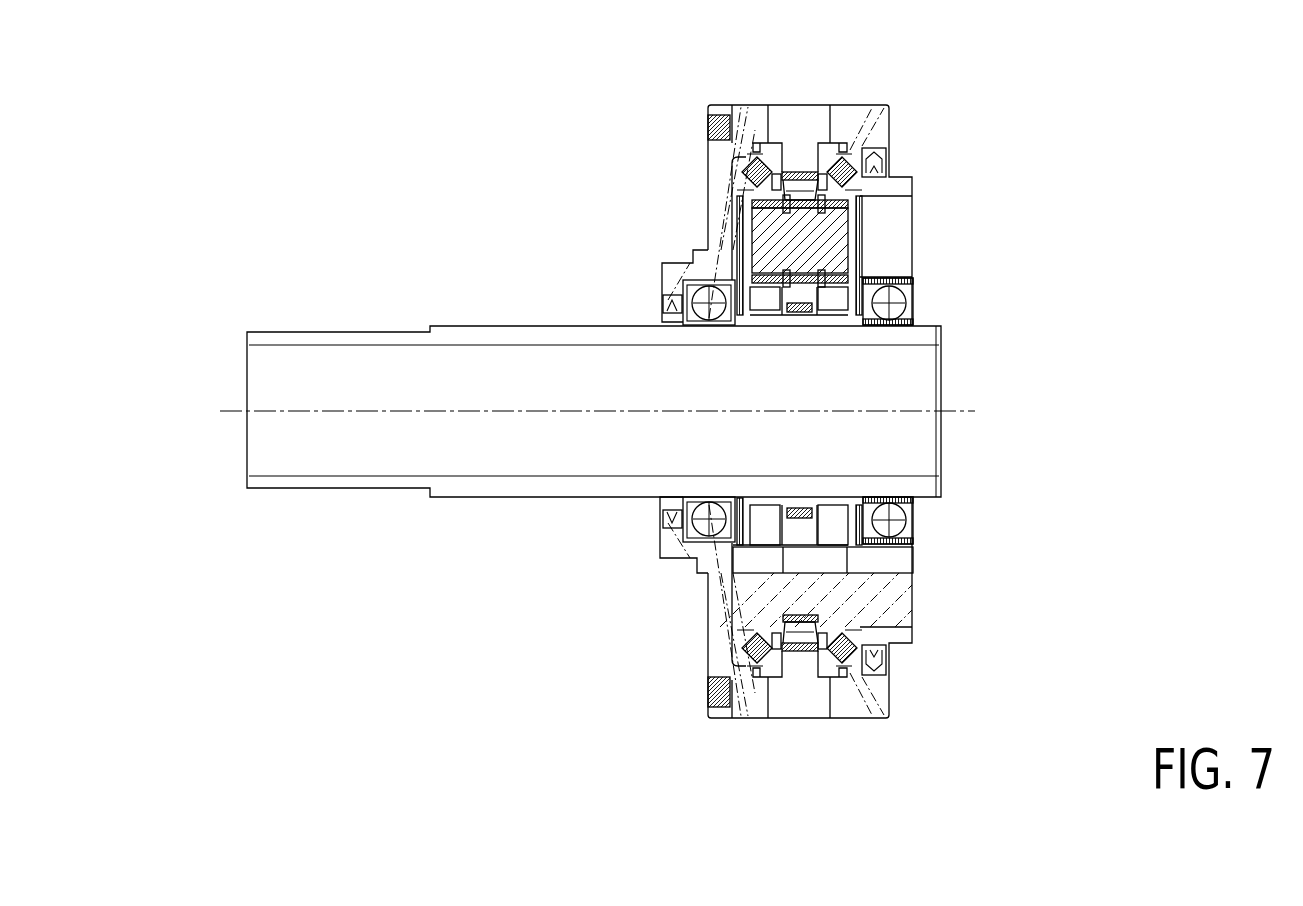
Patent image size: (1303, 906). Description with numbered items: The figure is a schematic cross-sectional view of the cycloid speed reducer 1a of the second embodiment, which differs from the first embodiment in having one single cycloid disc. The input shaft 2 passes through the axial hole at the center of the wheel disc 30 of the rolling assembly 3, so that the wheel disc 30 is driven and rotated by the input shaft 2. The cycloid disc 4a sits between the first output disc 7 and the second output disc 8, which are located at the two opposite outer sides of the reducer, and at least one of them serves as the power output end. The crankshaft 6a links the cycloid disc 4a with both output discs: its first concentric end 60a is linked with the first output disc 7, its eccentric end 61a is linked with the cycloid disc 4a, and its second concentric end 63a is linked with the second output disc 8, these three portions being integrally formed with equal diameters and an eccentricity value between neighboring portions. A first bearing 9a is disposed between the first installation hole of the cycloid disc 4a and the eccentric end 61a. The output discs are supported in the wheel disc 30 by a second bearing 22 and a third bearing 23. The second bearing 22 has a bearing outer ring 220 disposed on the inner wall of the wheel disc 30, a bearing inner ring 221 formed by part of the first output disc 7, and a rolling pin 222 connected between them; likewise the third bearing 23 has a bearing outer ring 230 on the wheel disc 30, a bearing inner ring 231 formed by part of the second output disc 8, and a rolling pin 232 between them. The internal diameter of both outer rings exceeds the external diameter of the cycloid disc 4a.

The cycloid speed reducer 1a is at (166, 106).
The input shaft 2 is at (353, 377).
The rolling assembly 3 is at (828, 101).
The wheel disc 30 is at (803, 186).
The cycloid disc 4a is at (803, 190).
The second output disc 8 is at (741, 181).
The first bearing 9a is at (779, 189).
The first output disc 7 is at (893, 184).
The crankshaft 6a is at (848, 218).
The first concentric end 60a is at (848, 270).
The eccentric end 61a is at (877, 305).
The second concentric end 63a is at (822, 300).
The third bearing 23 is at (572, 620).
The bearing inner ring 231 is at (749, 637).
The rolling pin 232 is at (797, 626).
The bearing outer ring 230 is at (708, 704).
The second bearing 22 is at (1038, 666).
The bearing inner ring 221 is at (855, 640).
The rolling pin 222 is at (860, 655).
The bearing outer ring 220 is at (832, 677).